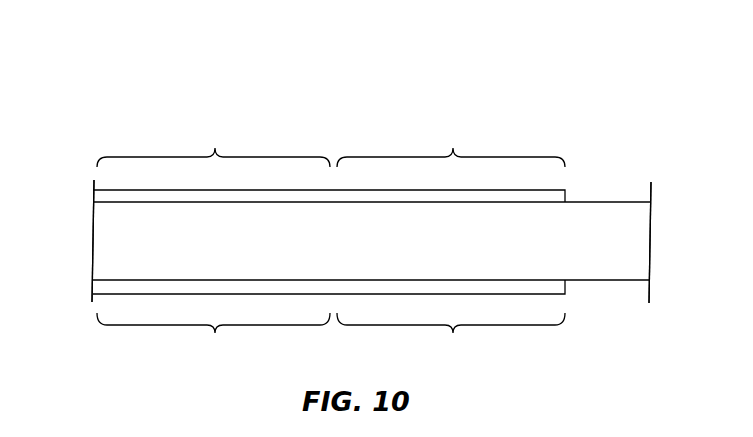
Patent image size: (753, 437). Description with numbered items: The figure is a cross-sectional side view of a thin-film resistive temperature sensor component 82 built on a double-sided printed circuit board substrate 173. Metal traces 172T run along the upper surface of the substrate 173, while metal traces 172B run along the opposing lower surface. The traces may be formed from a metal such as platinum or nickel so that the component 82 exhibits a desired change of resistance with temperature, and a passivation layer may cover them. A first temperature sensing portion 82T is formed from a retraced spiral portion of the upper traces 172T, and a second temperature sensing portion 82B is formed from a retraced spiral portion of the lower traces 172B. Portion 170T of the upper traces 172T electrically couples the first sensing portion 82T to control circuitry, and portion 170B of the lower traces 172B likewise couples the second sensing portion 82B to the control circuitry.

The temperature sensor component 82 is at (578, 90).
The substrate 173 is at (636, 246).
The metal traces 172T is at (100, 196).
The metal traces 172B is at (100, 290).
The portion of traces 170T is at (213, 147).
The first temperature sensing portion 82T is at (451, 147).
The portion of traces 170B is at (213, 334).
The second temperature sensing portion 82B is at (451, 334).